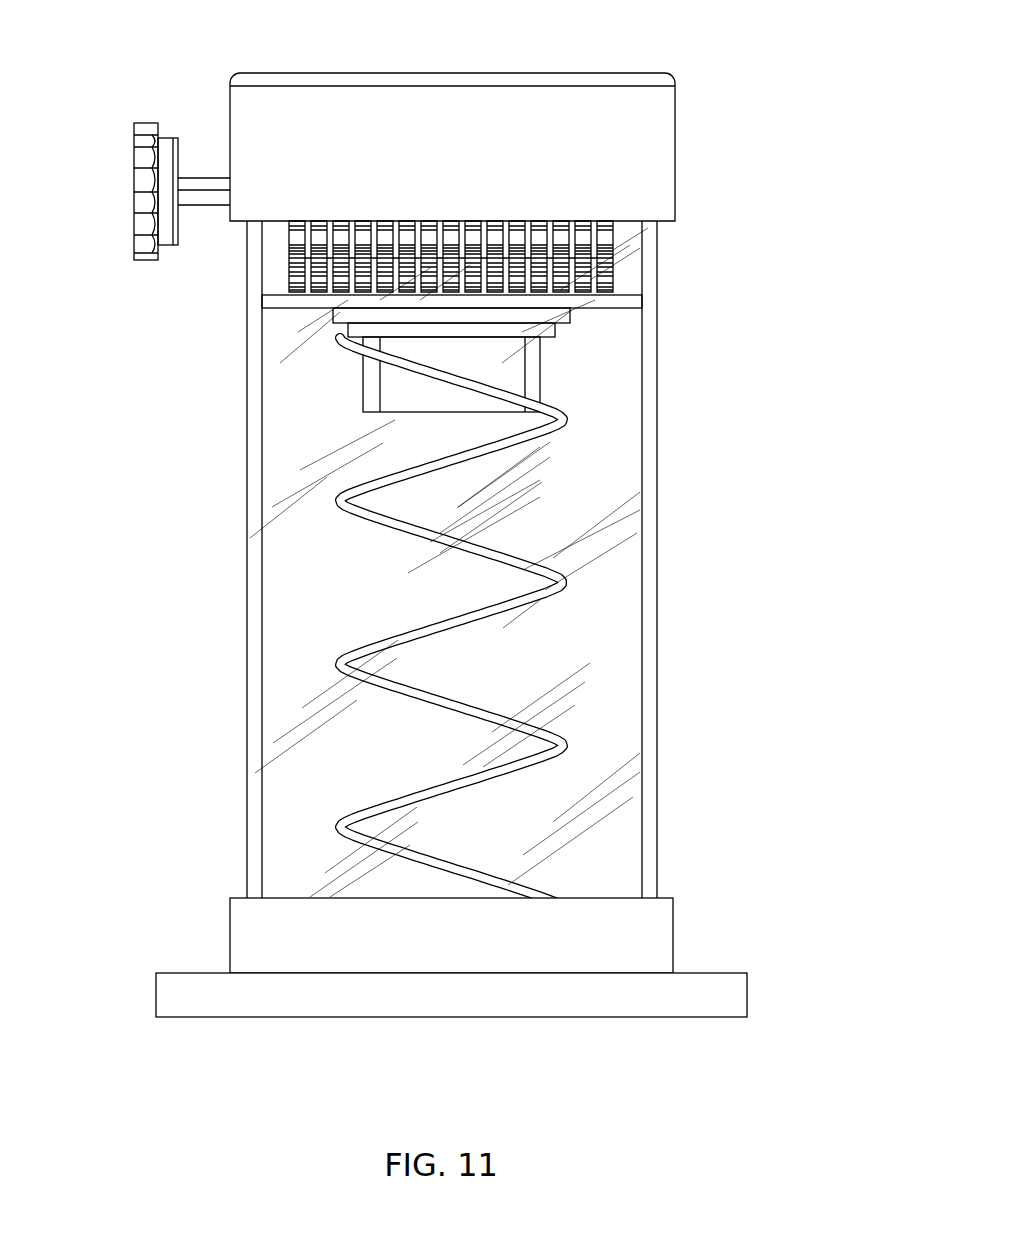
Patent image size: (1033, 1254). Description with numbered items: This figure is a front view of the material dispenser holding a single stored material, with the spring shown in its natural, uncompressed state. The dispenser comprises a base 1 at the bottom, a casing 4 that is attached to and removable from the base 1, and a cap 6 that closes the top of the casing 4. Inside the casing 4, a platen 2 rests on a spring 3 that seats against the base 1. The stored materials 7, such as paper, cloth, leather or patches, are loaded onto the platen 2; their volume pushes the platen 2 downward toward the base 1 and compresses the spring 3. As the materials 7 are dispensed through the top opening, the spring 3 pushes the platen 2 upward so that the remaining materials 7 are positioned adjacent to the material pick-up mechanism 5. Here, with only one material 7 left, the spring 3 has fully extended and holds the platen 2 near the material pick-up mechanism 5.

The base 1 is at (717, 960).
The platen 2 is at (640, 300).
The spring 3 is at (343, 668).
The casing 4 is at (652, 398).
The material pick-up mechanism 5 is at (126, 198).
The cap 6 is at (660, 82).
The materials 7 is at (263, 296).